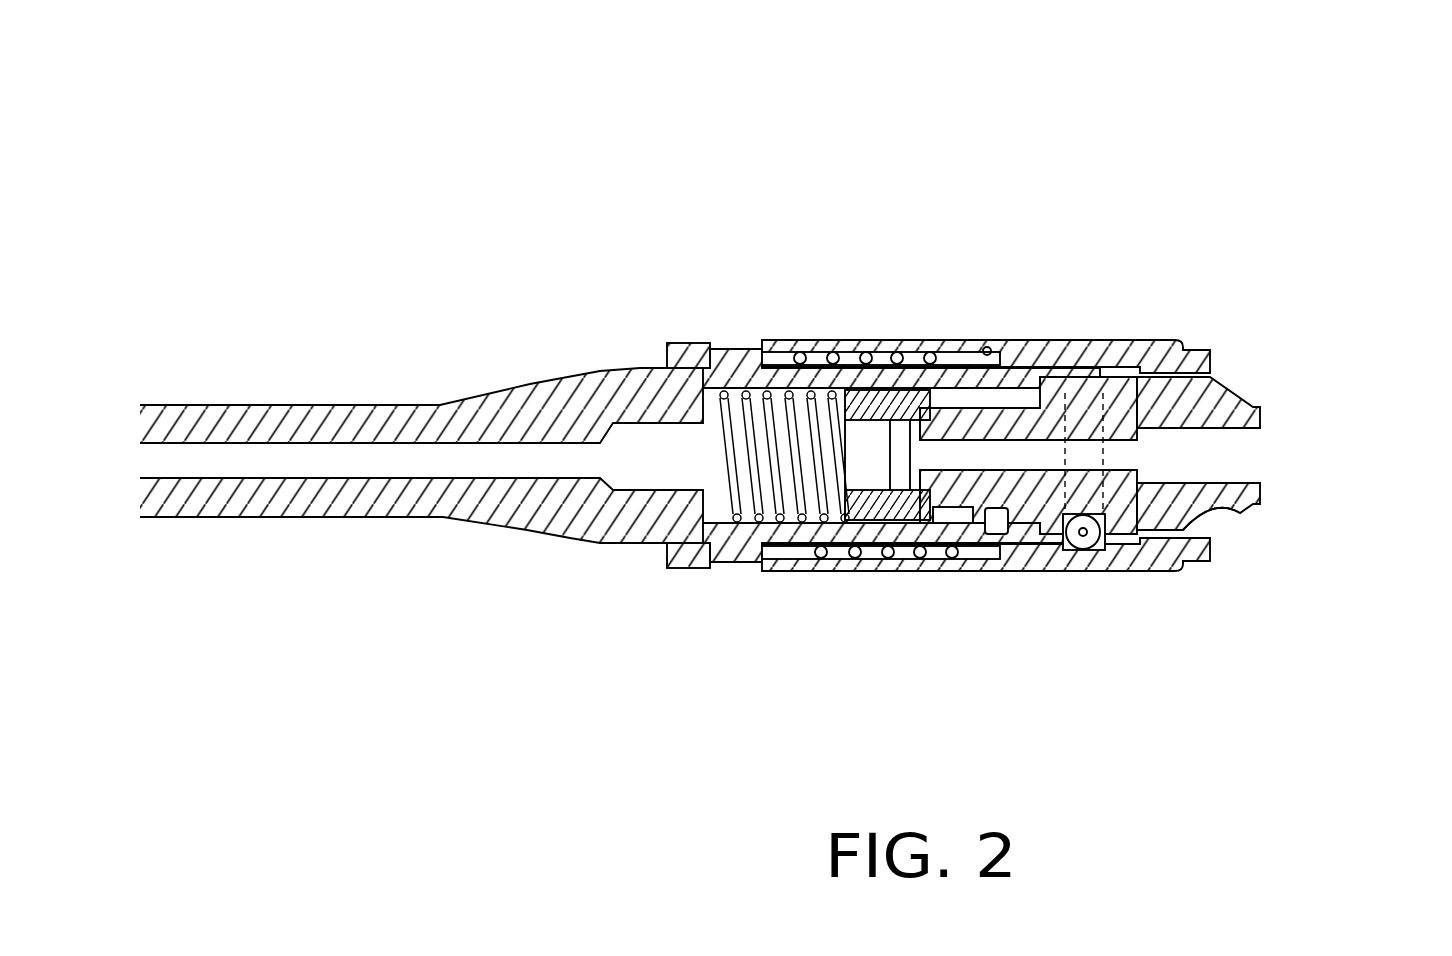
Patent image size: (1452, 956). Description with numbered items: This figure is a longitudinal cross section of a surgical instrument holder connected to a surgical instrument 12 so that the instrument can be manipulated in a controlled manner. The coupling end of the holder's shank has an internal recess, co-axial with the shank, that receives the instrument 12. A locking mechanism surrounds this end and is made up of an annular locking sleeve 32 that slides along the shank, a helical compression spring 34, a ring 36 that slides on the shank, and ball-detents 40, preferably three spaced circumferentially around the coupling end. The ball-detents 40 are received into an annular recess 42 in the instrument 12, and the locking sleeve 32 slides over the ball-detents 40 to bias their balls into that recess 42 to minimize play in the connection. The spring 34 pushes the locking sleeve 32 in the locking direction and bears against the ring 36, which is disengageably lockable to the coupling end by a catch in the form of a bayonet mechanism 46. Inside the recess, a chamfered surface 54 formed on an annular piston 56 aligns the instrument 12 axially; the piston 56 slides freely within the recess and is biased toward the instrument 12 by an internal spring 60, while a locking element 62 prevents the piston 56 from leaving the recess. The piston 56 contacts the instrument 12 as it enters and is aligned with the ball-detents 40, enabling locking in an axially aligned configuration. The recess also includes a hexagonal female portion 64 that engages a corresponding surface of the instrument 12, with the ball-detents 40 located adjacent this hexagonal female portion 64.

The surgical instrument 12 is at (1248, 405).
The annular locking sleeve 32 is at (990, 346).
The helical compression spring 34 is at (888, 340).
The ring 36 is at (742, 357).
The ball-detent 40 is at (1090, 540).
The annular recess 42 is at (1093, 383).
The bayonet mechanism 46 is at (670, 547).
The chamfered surface 54 is at (925, 494).
The annular piston 56 is at (810, 562).
The internal spring 60 is at (723, 393).
The locking element 62 is at (1000, 540).
The hexagonal female portion 64 is at (1236, 508).